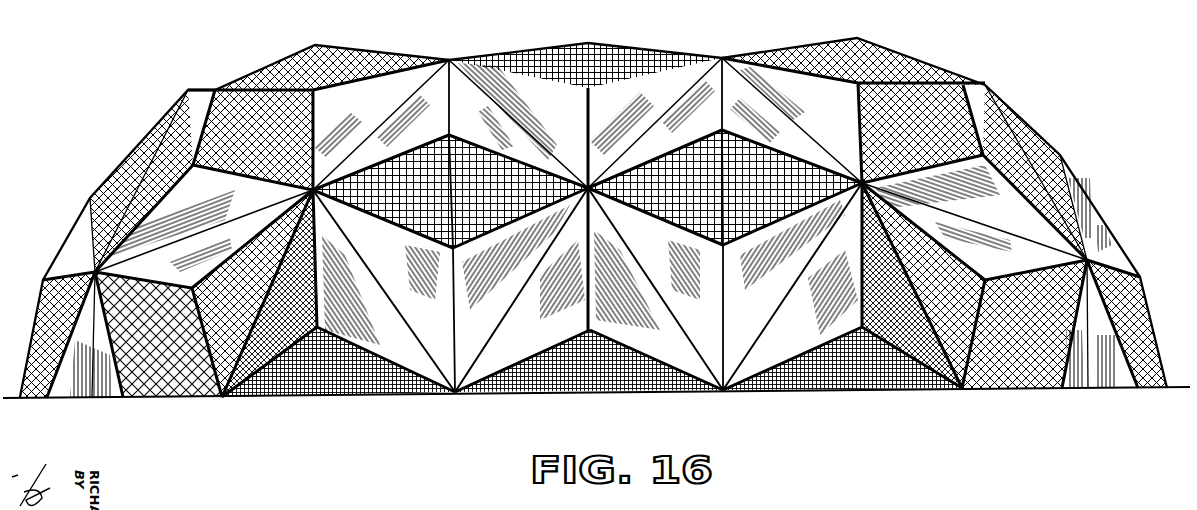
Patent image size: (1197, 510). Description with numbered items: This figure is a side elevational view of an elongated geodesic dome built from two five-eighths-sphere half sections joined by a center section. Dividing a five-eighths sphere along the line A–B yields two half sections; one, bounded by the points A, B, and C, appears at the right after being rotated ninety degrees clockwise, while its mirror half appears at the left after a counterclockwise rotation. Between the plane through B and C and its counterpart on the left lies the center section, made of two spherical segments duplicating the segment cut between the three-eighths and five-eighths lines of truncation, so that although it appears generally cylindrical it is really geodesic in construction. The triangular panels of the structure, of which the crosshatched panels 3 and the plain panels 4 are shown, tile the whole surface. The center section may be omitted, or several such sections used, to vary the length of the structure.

The crosshatched triangular panel 3 is at (593, 214).
The plain triangular panel 4 is at (593, 214).
The point A of section line A-B A is at (1162, 412).
The point B of plane BC B is at (726, 414).
The point C of plane BC C is at (722, 58).